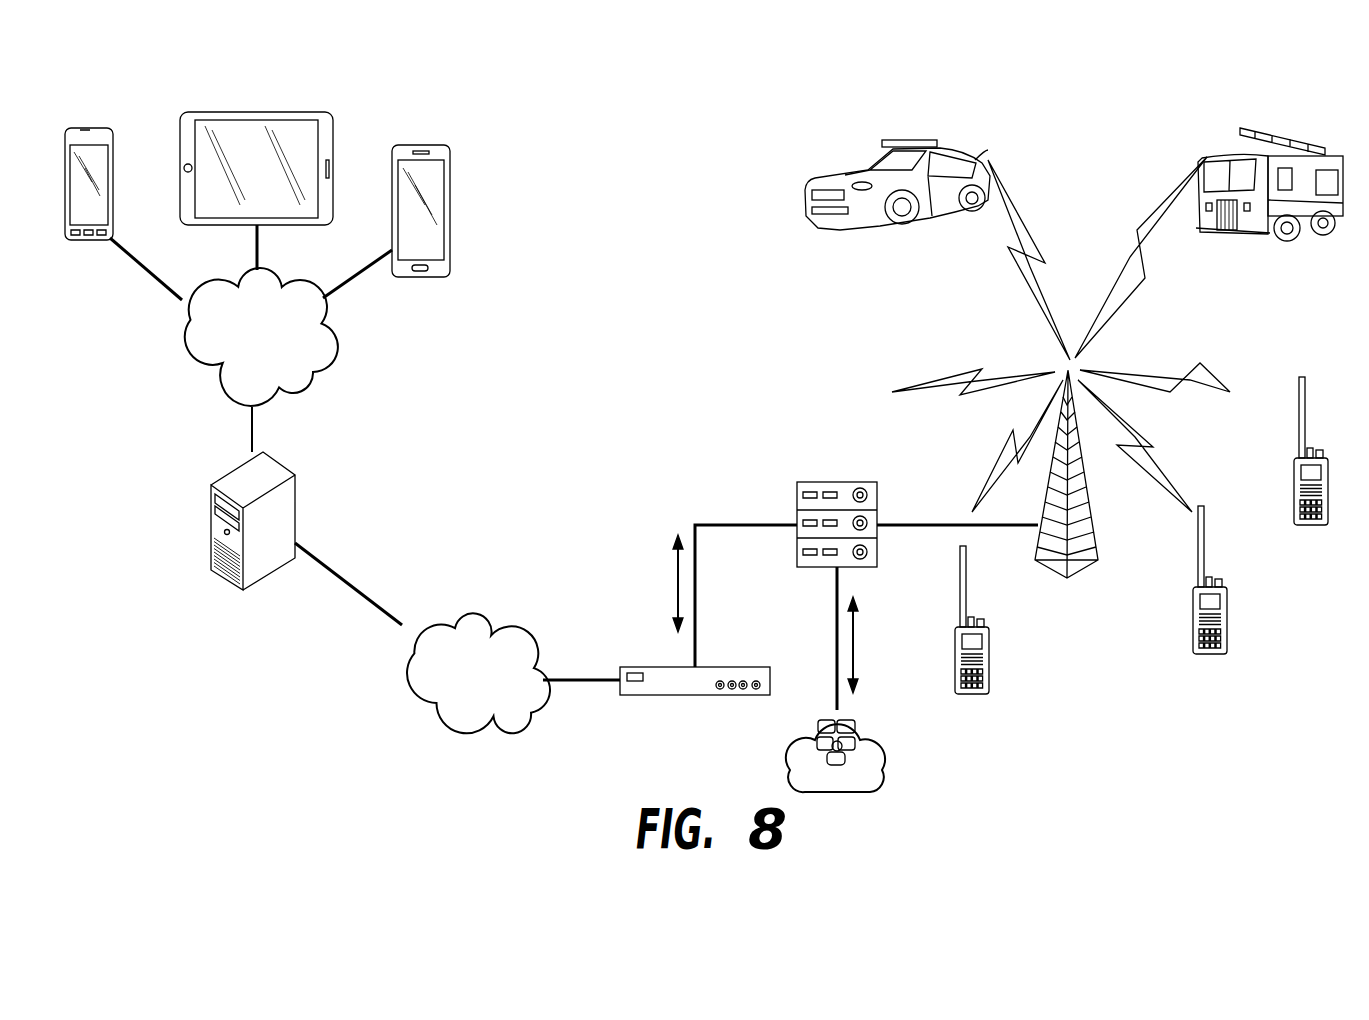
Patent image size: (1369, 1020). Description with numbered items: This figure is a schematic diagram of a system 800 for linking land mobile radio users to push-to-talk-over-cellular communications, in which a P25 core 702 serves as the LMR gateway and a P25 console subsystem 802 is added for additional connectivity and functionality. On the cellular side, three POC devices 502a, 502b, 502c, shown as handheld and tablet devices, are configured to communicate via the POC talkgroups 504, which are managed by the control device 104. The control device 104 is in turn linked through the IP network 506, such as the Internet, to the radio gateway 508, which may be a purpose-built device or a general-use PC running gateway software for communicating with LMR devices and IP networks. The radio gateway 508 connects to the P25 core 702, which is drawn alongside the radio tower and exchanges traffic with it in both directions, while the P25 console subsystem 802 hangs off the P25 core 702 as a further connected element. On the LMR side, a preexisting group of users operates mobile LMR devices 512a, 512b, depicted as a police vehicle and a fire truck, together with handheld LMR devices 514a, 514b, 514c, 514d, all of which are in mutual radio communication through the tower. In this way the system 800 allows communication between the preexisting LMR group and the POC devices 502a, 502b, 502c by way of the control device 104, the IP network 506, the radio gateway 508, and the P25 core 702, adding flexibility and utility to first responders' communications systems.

The system 800 is at (692, 81).
The POC device 502a is at (83, 130).
The POC device 502b is at (263, 112).
The POC device 502c is at (433, 145).
The POC talkgroups 504 is at (170, 347).
The control device 104 is at (295, 495).
The IP network 506 is at (475, 612).
The radio gateway 508 is at (668, 667).
The P25 core 702 is at (827, 482).
The P25 console subsystem 802 is at (788, 768).
The mobile LMR device 512a is at (870, 150).
The mobile LMR device 512b is at (1235, 153).
The handheld LMR device 514a is at (1312, 527).
The handheld LMR device 514b is at (1212, 653).
The handheld LMR device 514c is at (1053, 572).
The portable radio 514d is at (955, 675).